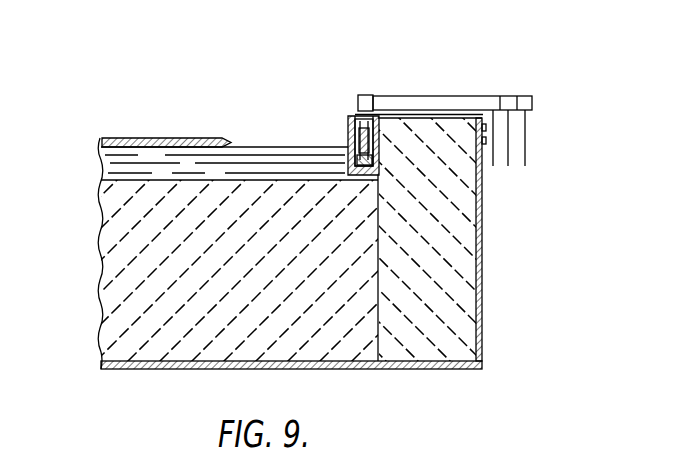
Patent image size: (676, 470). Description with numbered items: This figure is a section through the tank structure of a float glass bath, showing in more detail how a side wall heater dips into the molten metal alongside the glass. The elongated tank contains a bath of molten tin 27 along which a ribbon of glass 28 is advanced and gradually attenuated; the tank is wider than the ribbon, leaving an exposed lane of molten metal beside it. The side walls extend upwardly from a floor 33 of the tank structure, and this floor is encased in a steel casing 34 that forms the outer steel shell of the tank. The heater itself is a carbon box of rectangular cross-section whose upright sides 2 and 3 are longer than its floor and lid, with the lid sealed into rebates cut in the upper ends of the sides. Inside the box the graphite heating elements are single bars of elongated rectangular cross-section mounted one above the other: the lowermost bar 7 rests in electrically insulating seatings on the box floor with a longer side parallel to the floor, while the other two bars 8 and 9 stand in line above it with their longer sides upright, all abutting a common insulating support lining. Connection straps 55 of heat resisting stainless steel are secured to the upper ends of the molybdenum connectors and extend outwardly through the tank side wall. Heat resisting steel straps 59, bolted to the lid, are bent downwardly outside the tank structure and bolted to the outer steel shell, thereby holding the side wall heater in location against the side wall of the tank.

The upright side 2 is at (372, 113).
The upright side 3 is at (349, 124).
The lowermost graphite bar 7 is at (357, 158).
The graphite bar 8 is at (362, 141).
The graphite bar 9 is at (355, 124).
The bath of molten tin 27 is at (102, 160).
The ribbon of glass 28 is at (177, 139).
The floor 33 is at (105, 240).
The steel casing 34 is at (258, 368).
The connection straps 55 is at (433, 104).
The heat resisting steel straps 59 is at (462, 114).